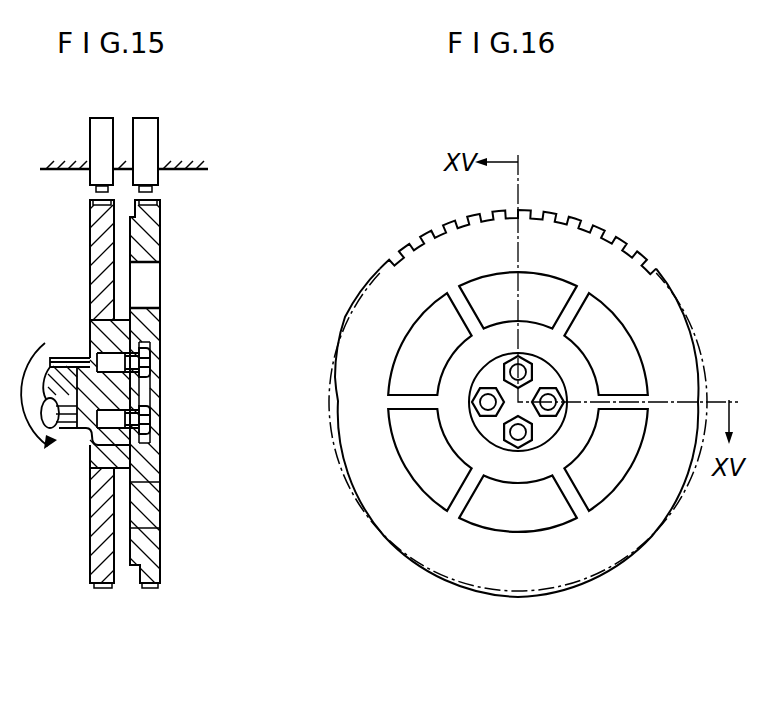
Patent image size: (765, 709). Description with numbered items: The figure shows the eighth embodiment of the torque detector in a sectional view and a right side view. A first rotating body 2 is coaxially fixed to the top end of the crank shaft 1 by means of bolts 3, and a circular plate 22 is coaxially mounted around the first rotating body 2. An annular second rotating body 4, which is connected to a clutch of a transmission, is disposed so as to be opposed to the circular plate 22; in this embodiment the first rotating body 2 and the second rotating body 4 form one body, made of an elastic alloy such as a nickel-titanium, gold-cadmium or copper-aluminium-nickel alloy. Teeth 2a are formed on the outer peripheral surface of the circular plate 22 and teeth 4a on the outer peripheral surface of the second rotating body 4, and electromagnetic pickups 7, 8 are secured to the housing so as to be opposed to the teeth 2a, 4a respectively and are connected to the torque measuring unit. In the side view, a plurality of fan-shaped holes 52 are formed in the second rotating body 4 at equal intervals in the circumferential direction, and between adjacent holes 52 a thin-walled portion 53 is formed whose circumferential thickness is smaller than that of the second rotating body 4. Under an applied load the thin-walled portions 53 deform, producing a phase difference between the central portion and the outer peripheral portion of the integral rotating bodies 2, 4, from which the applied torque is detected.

In FIG. 15, the crank shaft 1 is at (63, 435).
In FIG. 15, the first rotating body 2 is at (105, 334).
In FIG. 15, the teeth 2a is at (92, 200).
In FIG. 15, the bolts 3 is at (152, 418).
In FIG. 16, the bolts 3 is at (490, 402).
In FIG. 15, the second rotating body 4 is at (161, 550).
In FIG. 15, the teeth 4a is at (158, 200).
In FIG. 15, the electromagnetic pickup 7 is at (100, 130).
In FIG. 15, the electromagnetic pickup 8 is at (145, 140).
In FIG. 15, the circular plate 22 is at (92, 543).
In FIG. 15, the fan-shaped holes 52 is at (148, 283).
In FIG. 16, the fan-shaped holes 52 is at (555, 288).
In FIG. 16, the thin-walled portion 53 is at (407, 401).